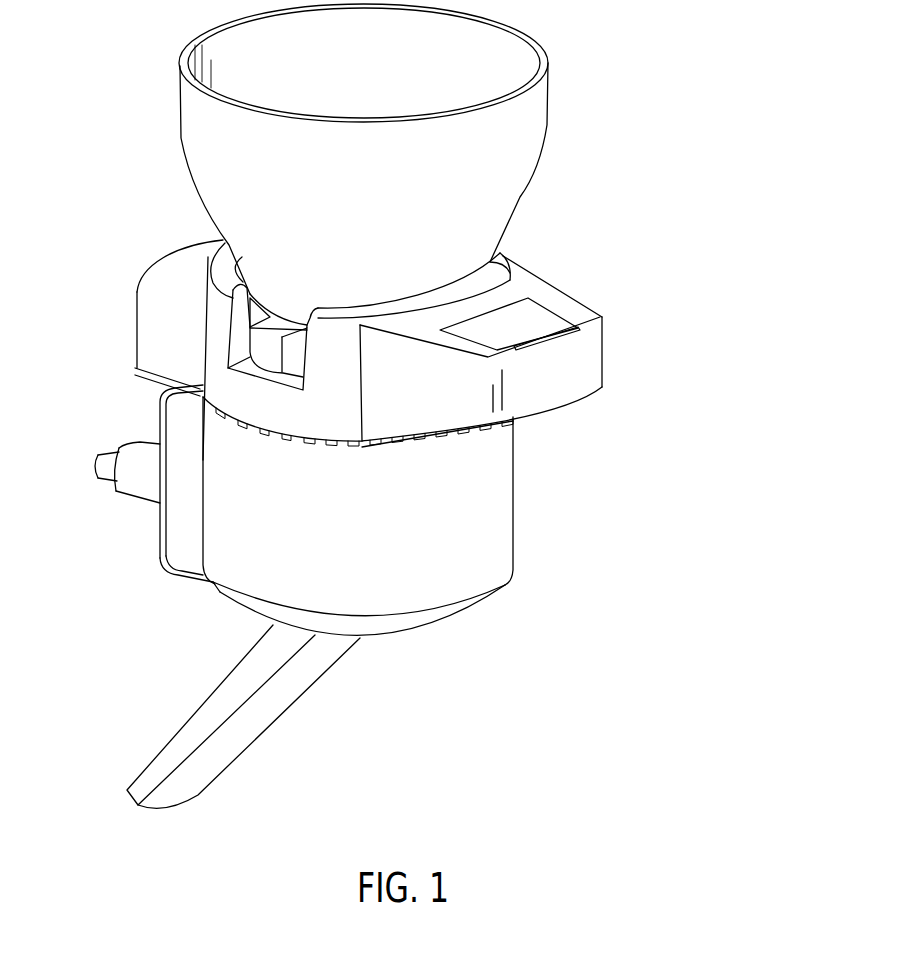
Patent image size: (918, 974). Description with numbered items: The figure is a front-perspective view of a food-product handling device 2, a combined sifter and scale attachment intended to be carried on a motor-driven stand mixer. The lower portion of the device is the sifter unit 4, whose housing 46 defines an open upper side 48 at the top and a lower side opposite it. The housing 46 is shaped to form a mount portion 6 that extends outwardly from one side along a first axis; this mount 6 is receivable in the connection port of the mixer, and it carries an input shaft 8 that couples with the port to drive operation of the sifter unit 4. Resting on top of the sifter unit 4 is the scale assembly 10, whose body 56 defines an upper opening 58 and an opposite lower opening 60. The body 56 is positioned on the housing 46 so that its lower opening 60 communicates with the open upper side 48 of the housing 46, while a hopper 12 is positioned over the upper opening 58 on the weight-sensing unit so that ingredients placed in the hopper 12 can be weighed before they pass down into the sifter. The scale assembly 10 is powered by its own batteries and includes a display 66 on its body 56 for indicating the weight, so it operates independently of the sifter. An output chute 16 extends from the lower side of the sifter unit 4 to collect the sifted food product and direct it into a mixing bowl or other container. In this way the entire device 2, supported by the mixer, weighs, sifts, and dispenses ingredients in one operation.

The food-product handling device 2 is at (700, 172).
The sifter unit 4 is at (371, 602).
The mount portion 6 is at (107, 461).
The input shaft 8 is at (110, 445).
The scale assembly 10 is at (386, 350).
The hopper 12 is at (513, 128).
The output chute 16 is at (283, 682).
The housing 46 is at (488, 517).
The open upper side 48 is at (208, 403).
The body 56 is at (522, 354).
The upper opening 58 is at (500, 263).
The lower opening 60 is at (240, 417).
The display 66 is at (540, 313).